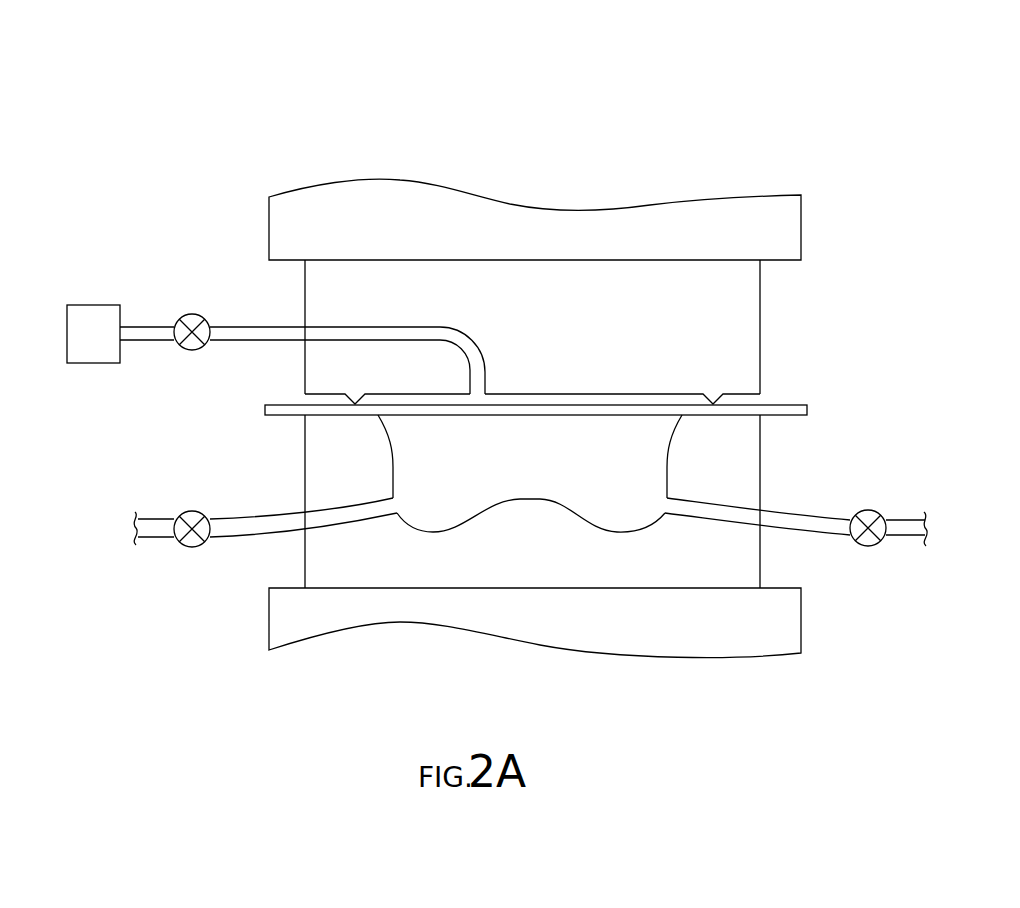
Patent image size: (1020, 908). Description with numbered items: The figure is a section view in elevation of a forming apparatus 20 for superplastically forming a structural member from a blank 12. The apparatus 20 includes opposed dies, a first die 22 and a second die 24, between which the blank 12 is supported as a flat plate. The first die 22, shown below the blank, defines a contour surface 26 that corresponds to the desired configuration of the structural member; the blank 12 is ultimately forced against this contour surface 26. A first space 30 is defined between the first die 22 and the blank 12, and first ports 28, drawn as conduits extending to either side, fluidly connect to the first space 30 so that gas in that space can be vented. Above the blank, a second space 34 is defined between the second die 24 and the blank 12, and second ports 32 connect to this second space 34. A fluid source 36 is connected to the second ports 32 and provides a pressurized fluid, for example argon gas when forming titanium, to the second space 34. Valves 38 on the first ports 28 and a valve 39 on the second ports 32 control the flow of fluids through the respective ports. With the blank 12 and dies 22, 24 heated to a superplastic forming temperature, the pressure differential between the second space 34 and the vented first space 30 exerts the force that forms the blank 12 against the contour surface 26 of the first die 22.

The forming apparatus 20 is at (724, 94).
The blank 12 is at (533, 405).
The first die 22 is at (747, 478).
The second die 24 is at (752, 332).
The contour surface 26 is at (570, 518).
The first ports 28 is at (237, 538).
The first space 30 is at (473, 472).
The second ports 32 is at (235, 327).
The second space 34 is at (567, 392).
The fluid source 36 is at (88, 305).
The valves 38 is at (197, 510).
The valve 39 is at (192, 350).